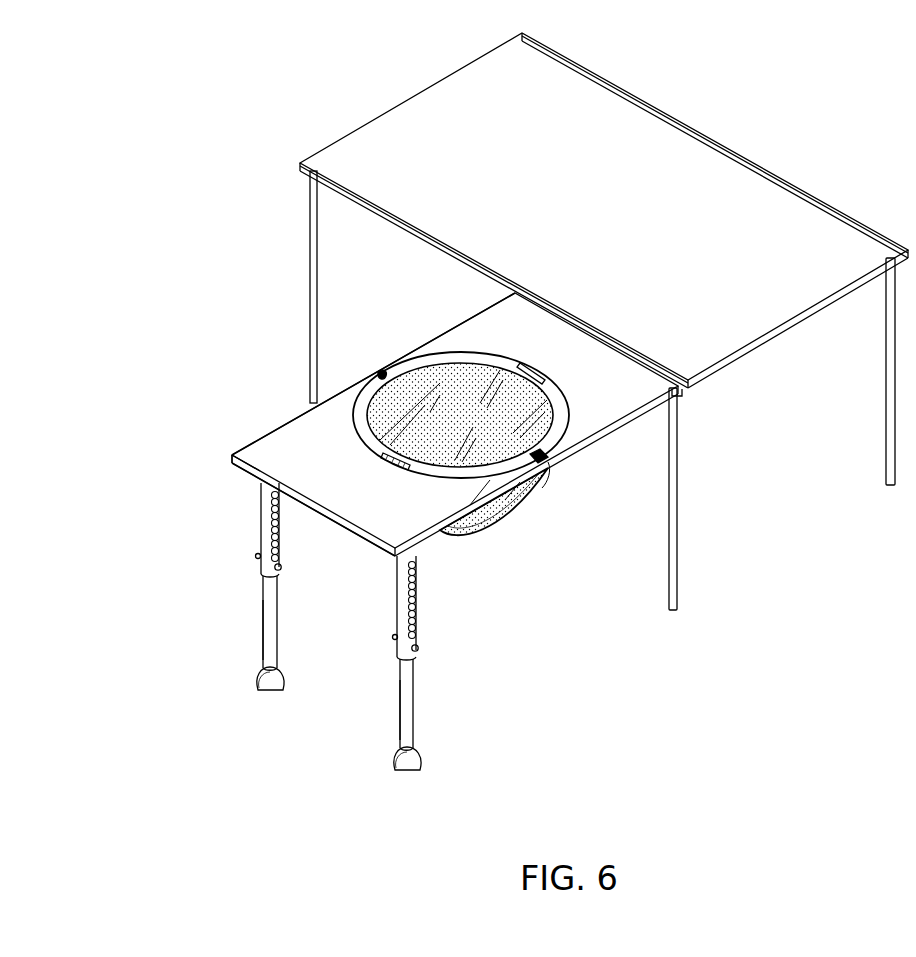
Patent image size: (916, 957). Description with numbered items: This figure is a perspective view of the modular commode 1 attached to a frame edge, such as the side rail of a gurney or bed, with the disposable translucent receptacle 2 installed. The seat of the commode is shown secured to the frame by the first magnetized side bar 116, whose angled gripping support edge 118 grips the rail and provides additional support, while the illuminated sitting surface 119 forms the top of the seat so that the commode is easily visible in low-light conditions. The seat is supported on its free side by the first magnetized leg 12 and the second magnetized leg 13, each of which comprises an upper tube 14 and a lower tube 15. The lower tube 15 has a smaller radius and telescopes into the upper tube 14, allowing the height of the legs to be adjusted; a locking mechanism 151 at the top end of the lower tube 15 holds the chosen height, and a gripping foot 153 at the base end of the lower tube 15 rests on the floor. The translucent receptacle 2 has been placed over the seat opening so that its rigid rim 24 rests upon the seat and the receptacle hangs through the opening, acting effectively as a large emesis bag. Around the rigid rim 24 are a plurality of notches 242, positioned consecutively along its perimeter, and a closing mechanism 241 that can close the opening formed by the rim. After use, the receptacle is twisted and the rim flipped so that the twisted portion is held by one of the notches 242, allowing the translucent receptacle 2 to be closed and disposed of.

The modular commode 1 is at (240, 338).
The translucent receptacle 2 is at (459, 422).
The first magnetized leg 12 is at (300, 548).
The second magnetized leg 13 is at (366, 628).
The upper tube 14 is at (267, 533).
The lower tube 15 is at (267, 612).
The rigid rim 24 is at (552, 458).
The first magnetized side bar 116 is at (237, 455).
The gripping support edge 118 is at (413, 552).
The illuminated sitting surface 119 is at (250, 422).
The locking mechanism 151 is at (273, 568).
The gripping foot 153 is at (262, 687).
The closing mechanism 241 is at (528, 372).
The notches 242 is at (383, 375).